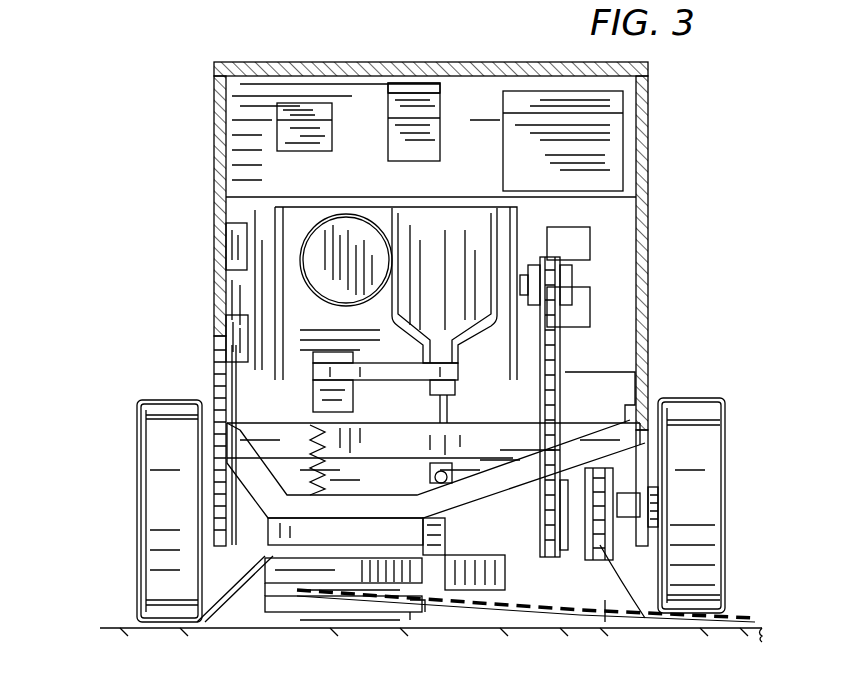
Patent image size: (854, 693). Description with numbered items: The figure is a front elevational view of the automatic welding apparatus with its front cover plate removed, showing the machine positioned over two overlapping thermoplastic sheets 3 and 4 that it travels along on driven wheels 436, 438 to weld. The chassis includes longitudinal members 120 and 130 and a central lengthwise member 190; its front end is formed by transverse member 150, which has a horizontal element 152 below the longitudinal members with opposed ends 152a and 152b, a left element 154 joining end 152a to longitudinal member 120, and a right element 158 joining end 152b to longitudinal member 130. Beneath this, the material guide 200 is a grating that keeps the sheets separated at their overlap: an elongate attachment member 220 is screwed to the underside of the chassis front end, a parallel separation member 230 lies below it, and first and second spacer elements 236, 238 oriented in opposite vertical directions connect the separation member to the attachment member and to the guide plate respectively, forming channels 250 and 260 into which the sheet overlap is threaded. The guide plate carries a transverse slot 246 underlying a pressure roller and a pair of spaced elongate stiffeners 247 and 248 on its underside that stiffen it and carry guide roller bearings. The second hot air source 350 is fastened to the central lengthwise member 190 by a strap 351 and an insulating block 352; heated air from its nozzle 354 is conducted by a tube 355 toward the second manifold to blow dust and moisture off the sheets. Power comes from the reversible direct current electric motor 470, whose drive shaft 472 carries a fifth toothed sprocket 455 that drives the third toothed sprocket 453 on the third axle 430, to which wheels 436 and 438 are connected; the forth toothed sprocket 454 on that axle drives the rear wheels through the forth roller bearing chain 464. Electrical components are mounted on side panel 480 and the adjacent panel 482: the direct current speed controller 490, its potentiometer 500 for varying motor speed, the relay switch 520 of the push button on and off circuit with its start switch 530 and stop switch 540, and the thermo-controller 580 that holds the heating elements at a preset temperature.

The thermoplastic sheet 3 is at (128, 628).
The thermoplastic sheet 4 is at (610, 625).
The longitudinal member 120 is at (215, 432).
The longitudinal member 130 is at (638, 415).
The transverse member 150 is at (500, 540).
The horizontal element 152 is at (378, 492).
The end of horizontal element 152a is at (270, 492).
The end of horizontal element 152b is at (452, 480).
The left element 154 is at (235, 428).
The right element 158 is at (575, 430).
The central lengthwise member 190 is at (320, 390).
The material guide 200 is at (437, 606).
The attachment member 220 is at (240, 605).
The separation member 230 is at (290, 620).
The first spacer element 236 is at (445, 535).
The second spacer element 238 is at (280, 600).
The slot 246 is at (345, 605).
The stiffener 247 is at (265, 620).
The stiffener 248 is at (418, 620).
The channel 250 is at (380, 620).
The channel 260 is at (322, 545).
The second hot air source 350 is at (480, 235).
The strap 351 is at (400, 370).
The insulating block 352 is at (335, 345).
The nozzle 354 is at (456, 388).
The tube 355 is at (448, 408).
The third axle 430 is at (625, 495).
The wheel 436 is at (705, 500).
The wheel 438 is at (160, 480).
The third toothed sprocket 453 is at (600, 560).
The forth toothed sprocket 454 is at (645, 620).
The fifth toothed sprocket 455 is at (565, 280).
The forth roller bearing chain 464 is at (560, 350).
The electric motor 470 is at (500, 230).
The drive shaft 472 is at (525, 280).
The side panel 480 is at (214, 197).
The housing side wall 482 is at (648, 186).
The direct current speed controller 490 is at (226, 258).
The potentiometer 500 is at (290, 130).
The relay switch 520 is at (235, 336).
The push button start switch 530 is at (435, 105).
The push button stop switch 540 is at (442, 138).
The thermo-controller 580 is at (618, 120).